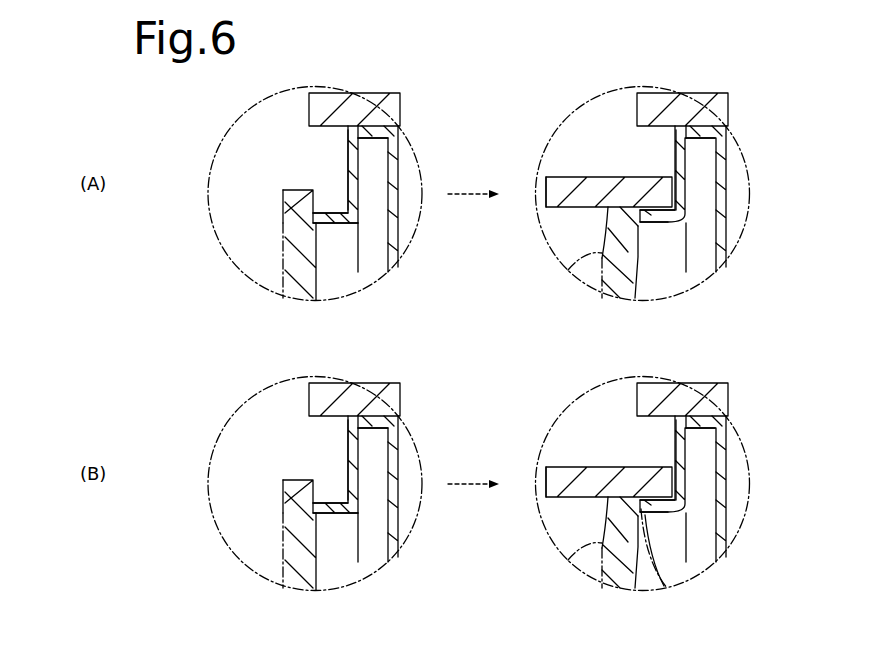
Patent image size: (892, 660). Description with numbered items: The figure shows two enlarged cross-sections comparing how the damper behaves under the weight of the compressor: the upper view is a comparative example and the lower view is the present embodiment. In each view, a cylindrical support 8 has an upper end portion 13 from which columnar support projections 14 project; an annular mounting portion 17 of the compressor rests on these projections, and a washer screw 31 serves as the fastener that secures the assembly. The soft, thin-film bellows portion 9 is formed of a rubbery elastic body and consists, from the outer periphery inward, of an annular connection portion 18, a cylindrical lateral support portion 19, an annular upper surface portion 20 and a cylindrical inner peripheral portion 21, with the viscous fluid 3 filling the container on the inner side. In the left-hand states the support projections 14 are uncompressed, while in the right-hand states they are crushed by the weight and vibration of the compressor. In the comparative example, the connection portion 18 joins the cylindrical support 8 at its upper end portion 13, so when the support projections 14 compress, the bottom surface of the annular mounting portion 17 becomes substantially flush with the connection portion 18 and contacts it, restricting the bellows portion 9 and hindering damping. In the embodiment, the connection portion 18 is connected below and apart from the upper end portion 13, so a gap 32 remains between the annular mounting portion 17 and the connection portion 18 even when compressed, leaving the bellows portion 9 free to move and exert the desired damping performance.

The viscous fluid 3 is at (378, 232).
The cylindrical support 8 is at (283, 240).
The bellows portion 9 is at (352, 122).
The upper end portion 13 is at (283, 210).
The support projection 14 is at (287, 188).
The annular mounting portion 17 is at (555, 177).
The connection portion 18 is at (328, 224).
The lateral support portion 19 is at (348, 162).
The upper surface portion 20 is at (373, 124).
The inner peripheral portion 21 is at (400, 173).
The washer screw 31 is at (336, 91).
The gap 32 is at (667, 588).